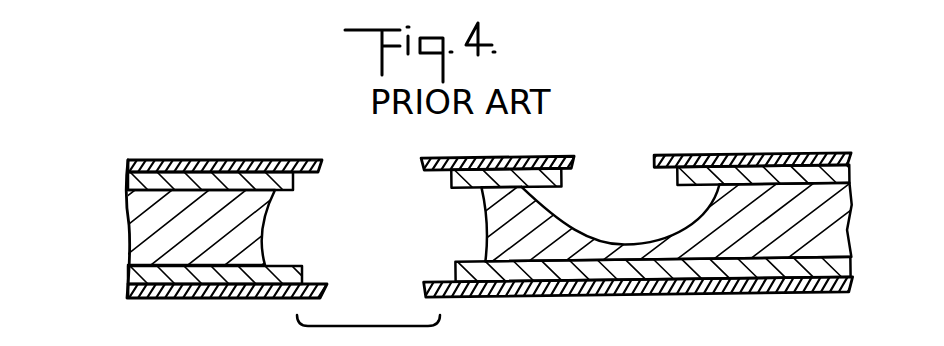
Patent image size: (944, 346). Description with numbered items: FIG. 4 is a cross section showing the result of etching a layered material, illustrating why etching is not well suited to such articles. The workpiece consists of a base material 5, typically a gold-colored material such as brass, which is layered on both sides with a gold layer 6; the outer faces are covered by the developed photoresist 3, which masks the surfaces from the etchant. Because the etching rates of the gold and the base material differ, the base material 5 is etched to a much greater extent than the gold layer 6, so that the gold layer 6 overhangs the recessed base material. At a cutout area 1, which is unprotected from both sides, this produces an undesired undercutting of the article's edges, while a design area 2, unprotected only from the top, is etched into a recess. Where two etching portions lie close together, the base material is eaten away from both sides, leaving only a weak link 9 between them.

The cutout area 1 is at (345, 163).
The design area 2 is at (620, 167).
The developed photoresist 3 is at (128, 163).
The base material 5 is at (140, 223).
The gold layer 6 is at (128, 188).
The weak link 9 is at (488, 224).